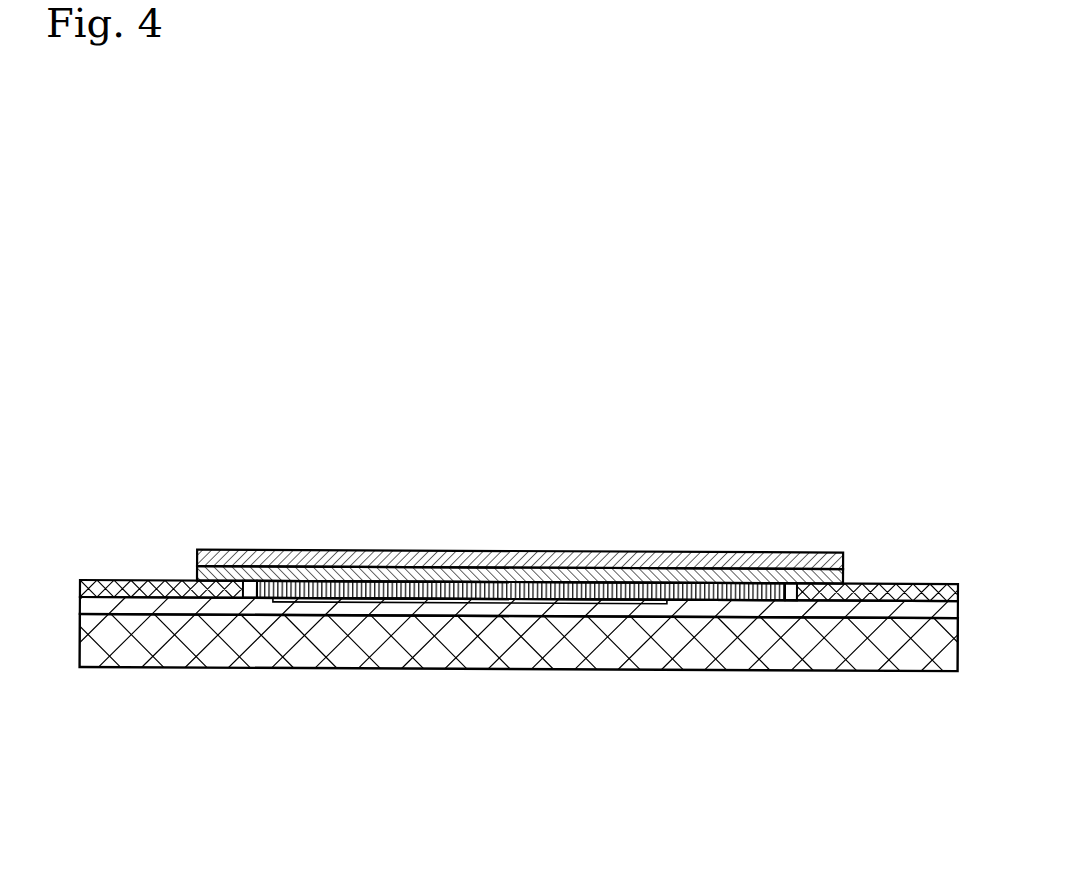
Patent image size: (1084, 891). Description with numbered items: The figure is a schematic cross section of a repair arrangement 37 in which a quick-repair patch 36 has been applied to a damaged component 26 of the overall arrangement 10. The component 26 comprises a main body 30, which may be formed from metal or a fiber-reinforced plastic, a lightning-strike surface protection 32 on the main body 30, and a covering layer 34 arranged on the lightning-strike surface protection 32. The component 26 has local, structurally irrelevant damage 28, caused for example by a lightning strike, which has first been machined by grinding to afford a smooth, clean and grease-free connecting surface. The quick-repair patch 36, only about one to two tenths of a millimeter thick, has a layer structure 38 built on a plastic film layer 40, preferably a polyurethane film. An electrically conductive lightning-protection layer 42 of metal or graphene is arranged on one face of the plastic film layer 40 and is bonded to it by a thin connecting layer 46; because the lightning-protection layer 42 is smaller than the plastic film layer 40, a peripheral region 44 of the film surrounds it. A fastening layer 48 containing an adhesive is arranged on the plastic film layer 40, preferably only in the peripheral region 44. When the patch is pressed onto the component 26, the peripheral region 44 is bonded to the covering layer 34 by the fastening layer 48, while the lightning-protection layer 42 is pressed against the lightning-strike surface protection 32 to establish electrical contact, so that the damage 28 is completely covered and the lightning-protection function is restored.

The sensor device 10 is at (137, 160).
The component 26 is at (155, 746).
The damage 28 is at (505, 718).
The main body 30 is at (517, 633).
The lightning-strike surface protection 32 is at (519, 607).
The covering layer 34 is at (513, 590).
The quick-repair patch 36 is at (395, 368).
The repair arrangement 37 is at (201, 321).
The layer structure 38 is at (286, 547).
The plastic film layer 40 is at (520, 560).
The lightning-protection layer 42 is at (520, 575).
The peripheral region 44 is at (791, 591).
The connecting layer 46 is at (521, 590).
The fastening layer 48 is at (470, 601).